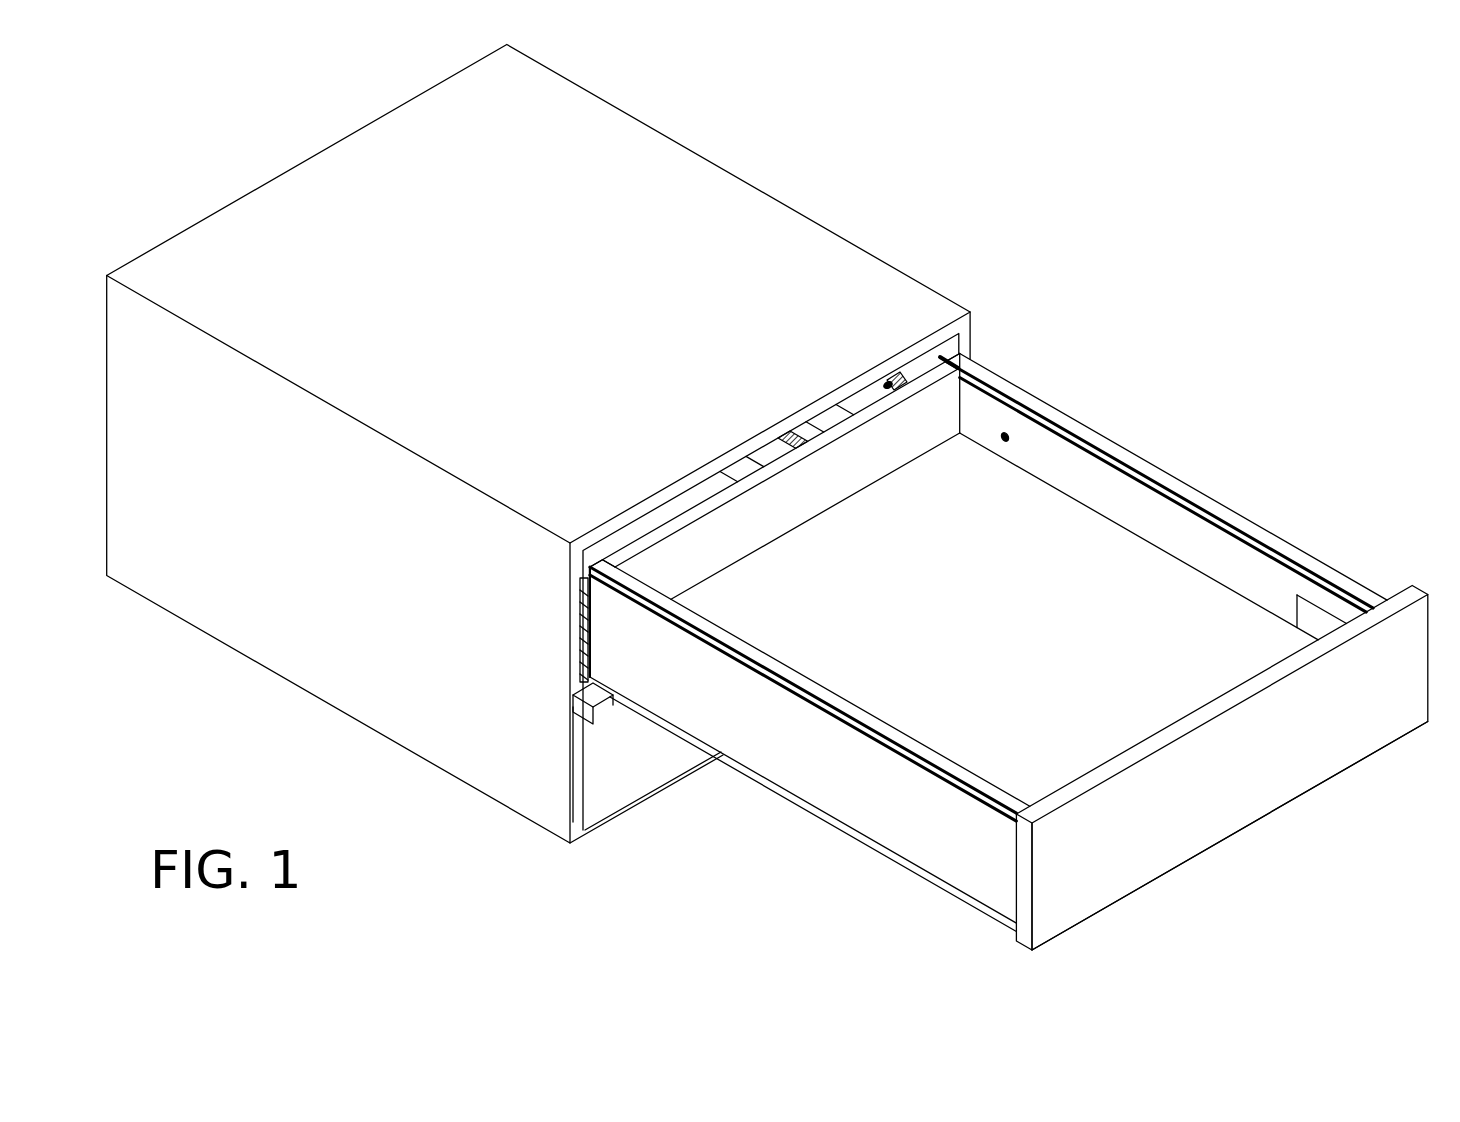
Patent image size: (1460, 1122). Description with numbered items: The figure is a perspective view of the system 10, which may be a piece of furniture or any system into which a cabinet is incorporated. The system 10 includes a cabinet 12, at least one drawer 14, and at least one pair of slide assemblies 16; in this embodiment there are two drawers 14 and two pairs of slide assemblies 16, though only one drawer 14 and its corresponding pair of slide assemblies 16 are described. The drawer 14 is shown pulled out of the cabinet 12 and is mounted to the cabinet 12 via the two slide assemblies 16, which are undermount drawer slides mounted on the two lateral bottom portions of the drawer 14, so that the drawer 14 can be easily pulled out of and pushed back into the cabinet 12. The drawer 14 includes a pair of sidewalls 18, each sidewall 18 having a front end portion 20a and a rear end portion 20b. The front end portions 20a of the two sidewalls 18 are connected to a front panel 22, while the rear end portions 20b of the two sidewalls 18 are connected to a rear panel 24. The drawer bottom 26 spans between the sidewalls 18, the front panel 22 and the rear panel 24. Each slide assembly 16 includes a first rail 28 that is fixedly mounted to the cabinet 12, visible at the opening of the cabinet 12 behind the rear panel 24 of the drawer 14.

The system 10 is at (252, 183).
The cabinet 12 is at (647, 148).
The drawer 14 is at (655, 810).
The slide assembly 16 is at (905, 375).
The sidewall 18 is at (1205, 525).
The front end portion 20a is at (1338, 602).
The rear end portion 20b is at (1048, 455).
The front panel 22 is at (1272, 793).
The rear panel 24 is at (933, 418).
The drawer bottom 26 is at (1110, 555).
The first rail 28 is at (878, 393).